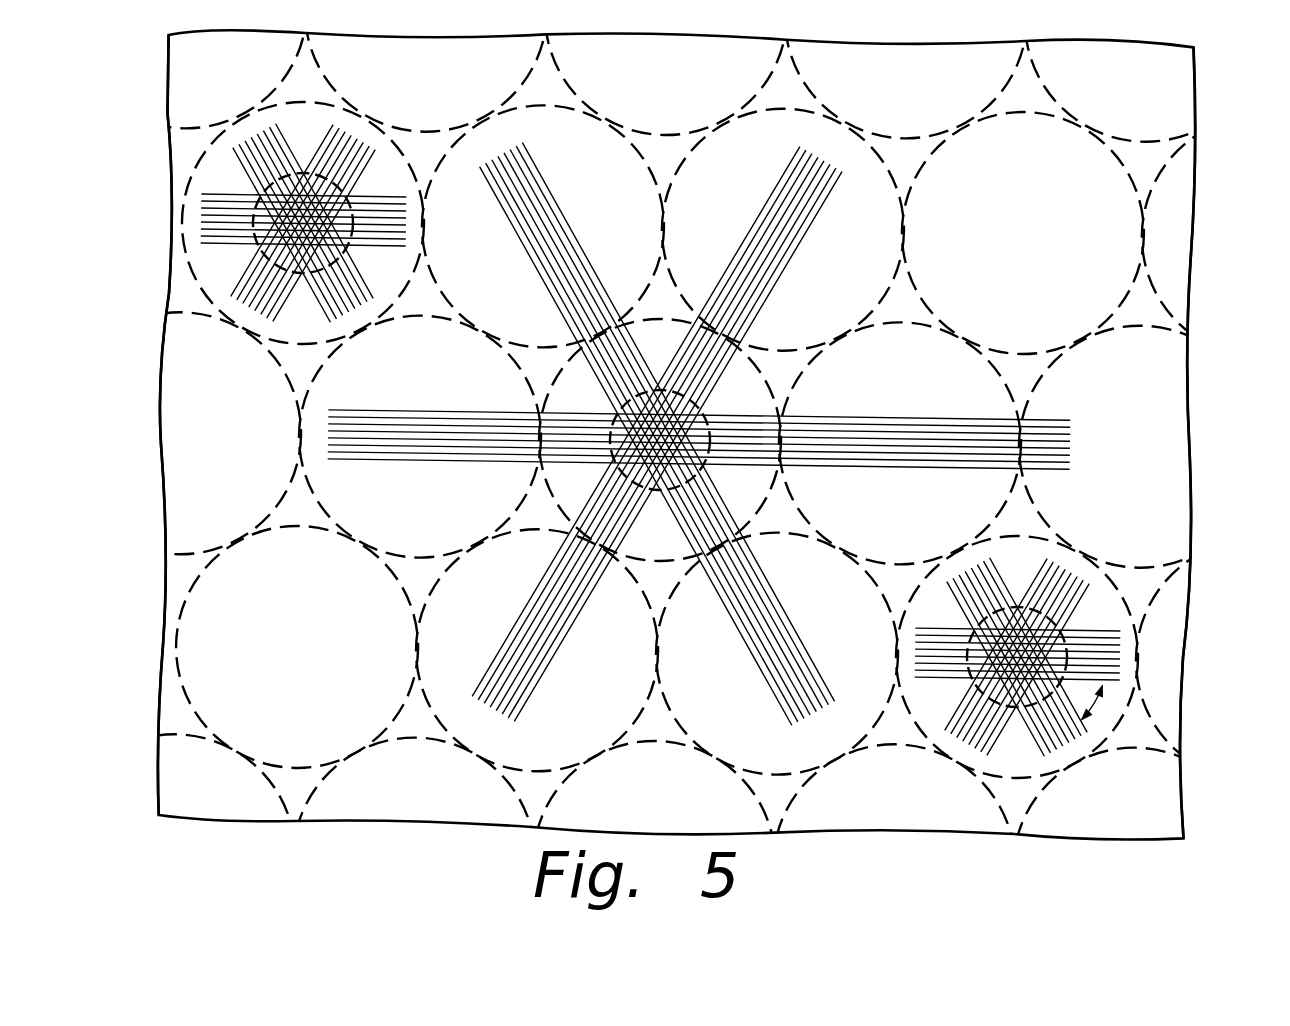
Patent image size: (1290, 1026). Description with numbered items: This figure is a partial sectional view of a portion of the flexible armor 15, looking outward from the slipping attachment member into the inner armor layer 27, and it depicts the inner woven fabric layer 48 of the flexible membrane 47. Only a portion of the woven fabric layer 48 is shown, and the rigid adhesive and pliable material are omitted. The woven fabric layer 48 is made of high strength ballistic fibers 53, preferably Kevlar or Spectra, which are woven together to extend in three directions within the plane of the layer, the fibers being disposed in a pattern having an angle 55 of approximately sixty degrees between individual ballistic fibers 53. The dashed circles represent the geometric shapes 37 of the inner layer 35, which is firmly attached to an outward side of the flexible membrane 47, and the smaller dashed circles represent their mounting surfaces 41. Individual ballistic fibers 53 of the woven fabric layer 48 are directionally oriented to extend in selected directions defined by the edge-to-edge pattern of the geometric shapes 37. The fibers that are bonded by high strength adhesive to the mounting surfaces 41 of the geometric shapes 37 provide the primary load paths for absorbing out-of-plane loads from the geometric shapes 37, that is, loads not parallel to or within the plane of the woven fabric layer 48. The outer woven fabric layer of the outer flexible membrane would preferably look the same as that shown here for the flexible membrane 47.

The flexible armor 15 is at (156, 364).
The inner armor layer 27 is at (152, 476).
The inner layer of geometric shapes 35 is at (1205, 253).
The geometric shapes 37 is at (1165, 382).
The mounting surfaces 41 is at (1040, 616).
The flexible membrane 47 is at (1101, 659).
The inner woven fabric layer 48 is at (1098, 628).
The ballistic fibers 53 is at (1083, 733).
The angle 55 is at (1097, 702).